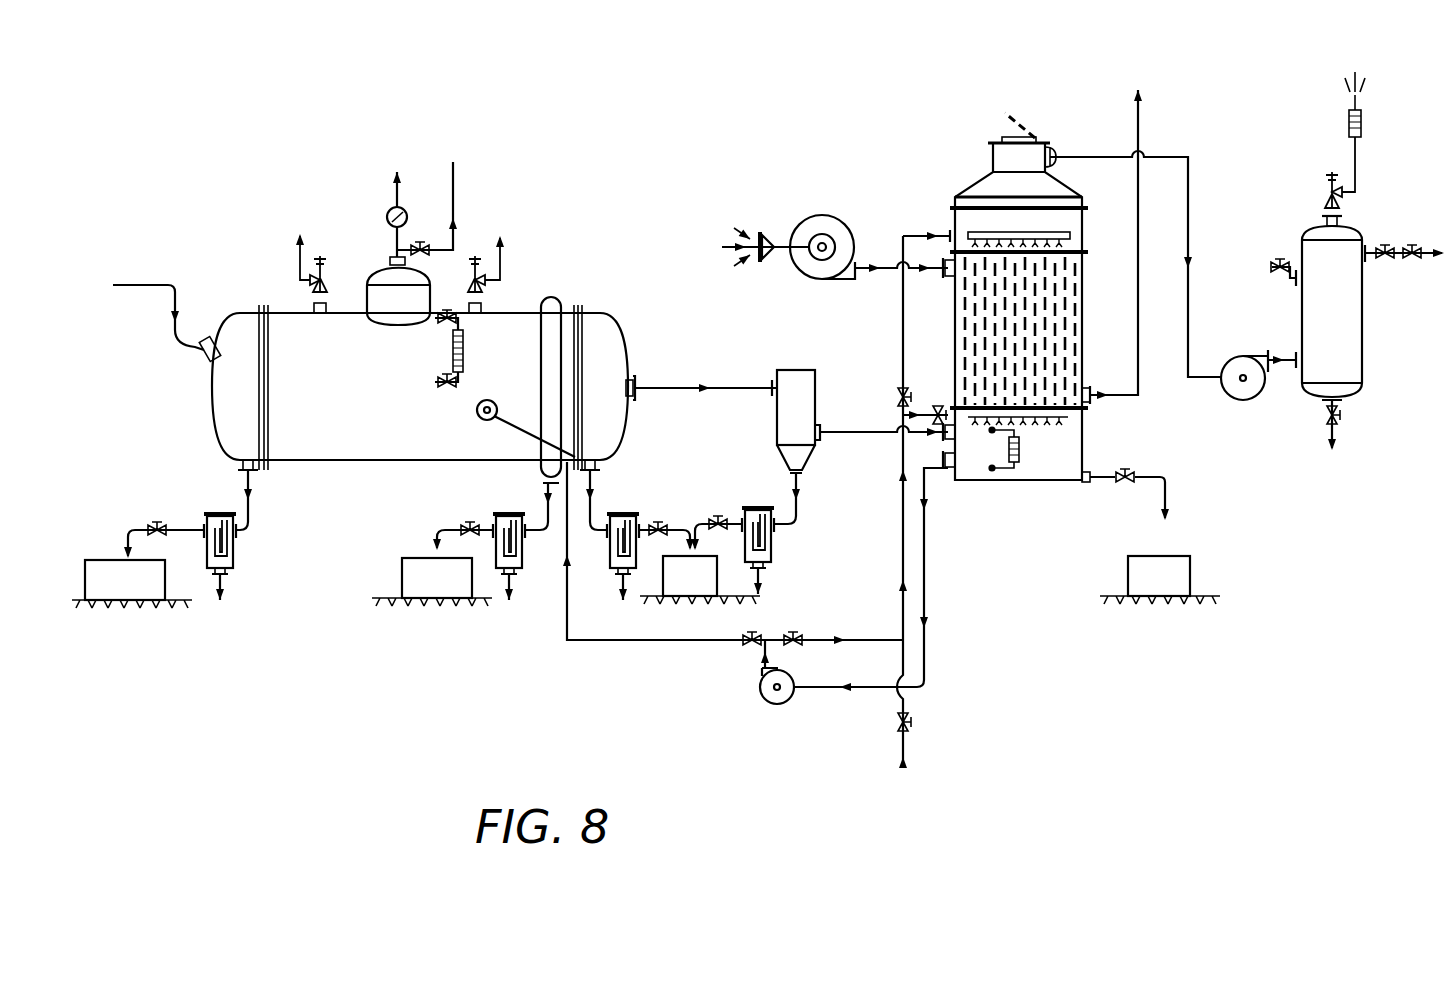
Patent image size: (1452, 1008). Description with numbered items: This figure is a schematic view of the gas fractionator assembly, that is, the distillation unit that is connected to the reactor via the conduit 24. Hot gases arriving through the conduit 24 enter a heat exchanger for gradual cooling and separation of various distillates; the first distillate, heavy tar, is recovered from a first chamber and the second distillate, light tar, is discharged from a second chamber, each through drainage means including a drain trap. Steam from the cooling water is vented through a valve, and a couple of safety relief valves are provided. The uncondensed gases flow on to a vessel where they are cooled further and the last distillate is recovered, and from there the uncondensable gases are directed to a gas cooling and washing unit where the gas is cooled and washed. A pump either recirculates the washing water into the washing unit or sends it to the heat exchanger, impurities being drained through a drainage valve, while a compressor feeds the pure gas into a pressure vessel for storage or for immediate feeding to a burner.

The conduit 24 is at (148, 285).